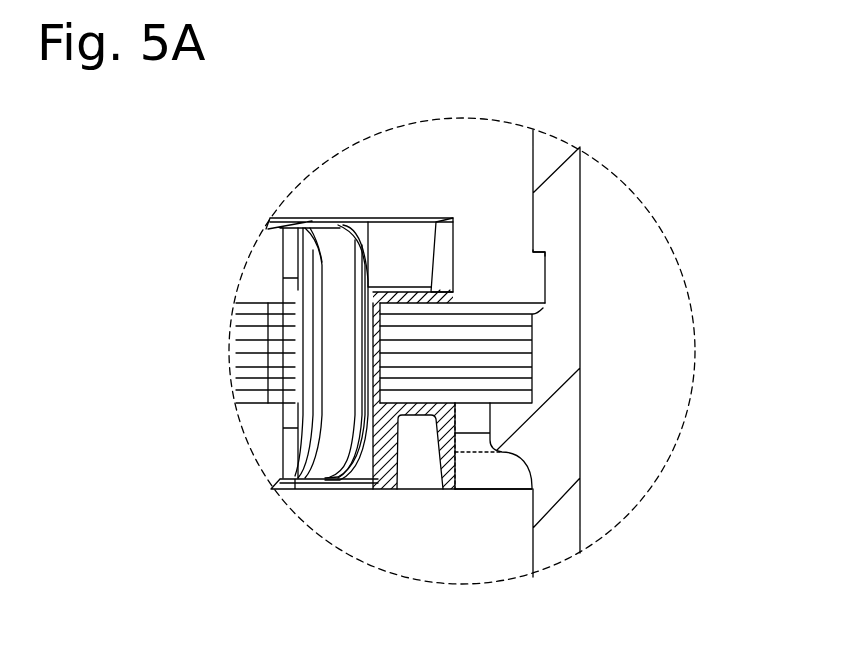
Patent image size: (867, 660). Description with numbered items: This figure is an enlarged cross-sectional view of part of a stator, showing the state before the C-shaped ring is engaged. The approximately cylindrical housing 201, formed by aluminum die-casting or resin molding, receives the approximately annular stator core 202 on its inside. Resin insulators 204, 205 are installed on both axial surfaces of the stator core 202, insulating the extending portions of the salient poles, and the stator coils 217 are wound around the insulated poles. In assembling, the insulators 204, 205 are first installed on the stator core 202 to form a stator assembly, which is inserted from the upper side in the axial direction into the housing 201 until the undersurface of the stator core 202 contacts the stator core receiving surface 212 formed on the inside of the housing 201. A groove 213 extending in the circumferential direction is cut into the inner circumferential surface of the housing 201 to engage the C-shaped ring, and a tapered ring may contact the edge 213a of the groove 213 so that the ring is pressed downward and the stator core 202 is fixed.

The housing 201 is at (567, 337).
The stator core 202 is at (520, 372).
The insulator 204 is at (387, 490).
The insulator 205 is at (445, 218).
The stator core receiving surface 212 is at (520, 400).
The groove 213 is at (538, 283).
The edge of the groove 213a is at (535, 258).
The stator coil 217 is at (328, 245).